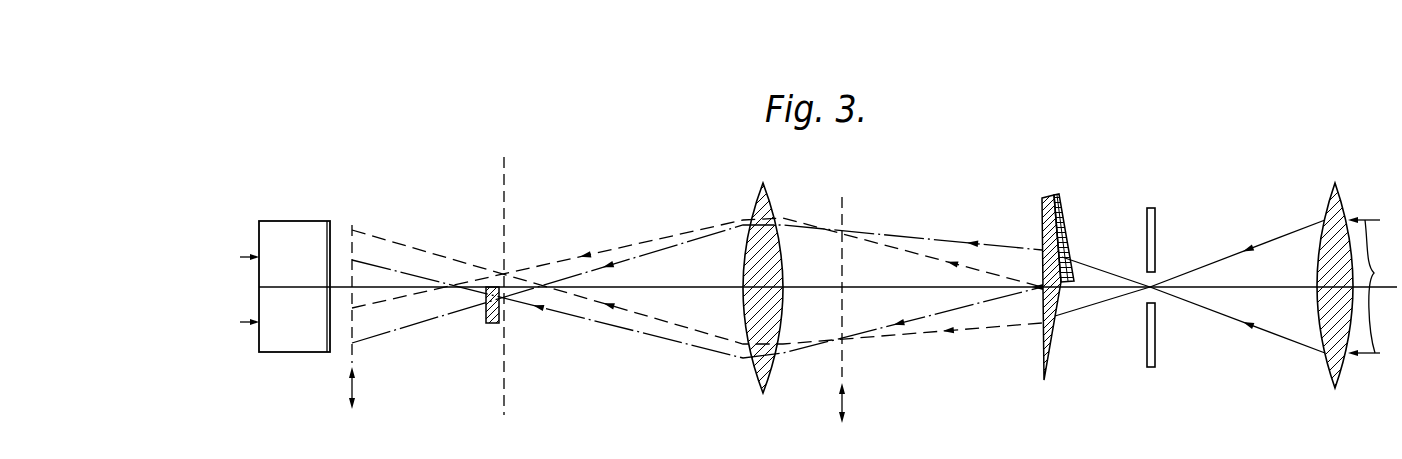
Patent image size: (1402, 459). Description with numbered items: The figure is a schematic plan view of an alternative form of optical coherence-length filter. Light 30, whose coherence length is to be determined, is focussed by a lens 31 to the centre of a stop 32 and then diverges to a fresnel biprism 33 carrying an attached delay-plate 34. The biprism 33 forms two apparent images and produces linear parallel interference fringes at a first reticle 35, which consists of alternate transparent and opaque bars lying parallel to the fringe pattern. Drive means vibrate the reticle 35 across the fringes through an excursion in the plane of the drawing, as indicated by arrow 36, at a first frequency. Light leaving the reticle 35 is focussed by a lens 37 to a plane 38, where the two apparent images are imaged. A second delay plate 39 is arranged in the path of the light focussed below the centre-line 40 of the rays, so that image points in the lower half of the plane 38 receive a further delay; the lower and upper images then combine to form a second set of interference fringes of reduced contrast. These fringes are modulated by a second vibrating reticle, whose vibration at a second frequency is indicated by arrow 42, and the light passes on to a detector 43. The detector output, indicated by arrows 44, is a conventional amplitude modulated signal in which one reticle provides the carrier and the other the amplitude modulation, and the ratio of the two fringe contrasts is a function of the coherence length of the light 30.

The light 30 is at (1373, 286).
The lens 31 is at (1327, 205).
The stop 32 is at (1152, 207).
The fresnel biprism 33 is at (1053, 343).
The delay-plate 34 is at (1061, 212).
The first reticle 35 is at (845, 198).
The arrow 36 is at (848, 406).
The lens 37 is at (764, 393).
The plane 38 is at (506, 164).
The delay plate 39 is at (491, 325).
The centre-line 40 is at (383, 287).
The arrow 42 is at (350, 393).
The detector 43 is at (298, 221).
The arrows 44 is at (256, 327).